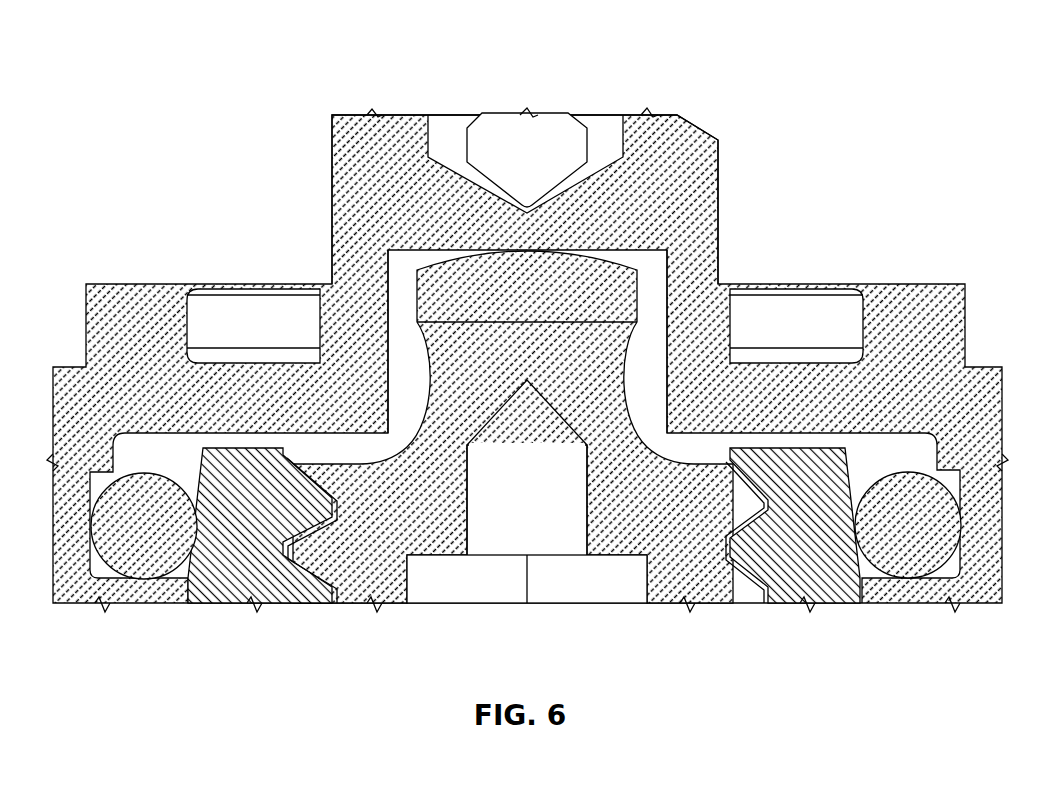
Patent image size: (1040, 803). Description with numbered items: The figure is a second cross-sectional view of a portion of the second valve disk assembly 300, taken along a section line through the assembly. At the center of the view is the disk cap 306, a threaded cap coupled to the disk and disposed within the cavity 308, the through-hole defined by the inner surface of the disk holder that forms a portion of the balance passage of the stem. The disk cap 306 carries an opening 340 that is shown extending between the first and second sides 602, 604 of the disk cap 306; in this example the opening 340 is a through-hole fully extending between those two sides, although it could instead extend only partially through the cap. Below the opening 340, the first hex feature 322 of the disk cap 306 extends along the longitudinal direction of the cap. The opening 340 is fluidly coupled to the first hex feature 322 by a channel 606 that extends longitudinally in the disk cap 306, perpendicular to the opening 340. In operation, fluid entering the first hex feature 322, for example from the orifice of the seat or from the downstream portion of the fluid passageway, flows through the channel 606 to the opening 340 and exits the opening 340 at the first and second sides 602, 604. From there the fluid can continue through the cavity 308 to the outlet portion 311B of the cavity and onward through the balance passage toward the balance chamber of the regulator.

The second valve disk assembly 300 is at (132, 92).
The second portion of the cavity 311B is at (459, 77).
The cavity 308 is at (527, 160).
The opening 340 is at (413, 354).
The first side of the disk cap 602 is at (408, 396).
The second side of the disk cap 604 is at (644, 396).
The channel 606 is at (465, 522).
The first hex feature 322 is at (470, 606).
The disk cap 306 is at (717, 606).